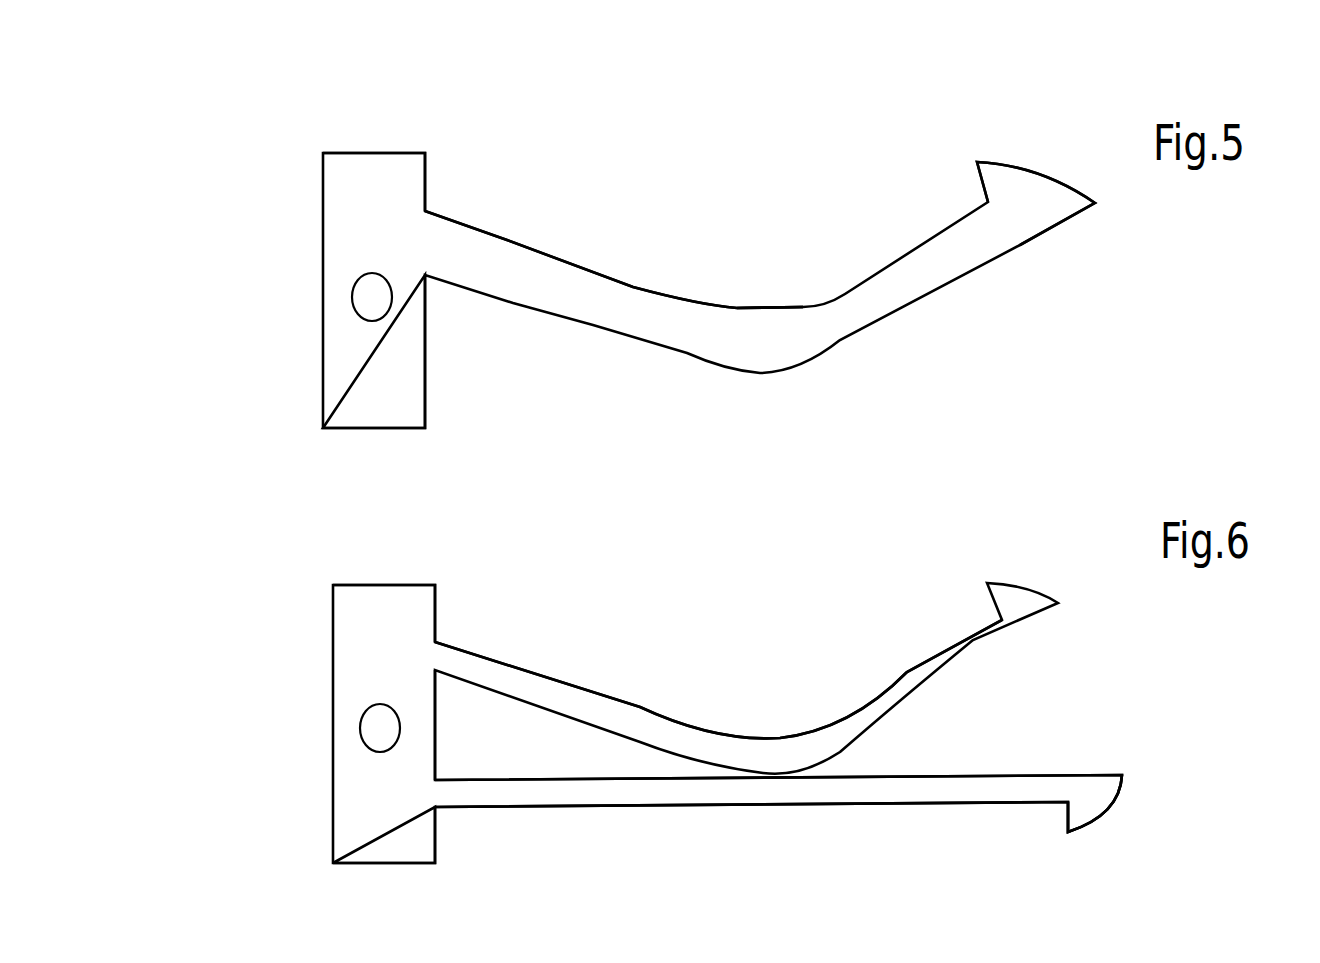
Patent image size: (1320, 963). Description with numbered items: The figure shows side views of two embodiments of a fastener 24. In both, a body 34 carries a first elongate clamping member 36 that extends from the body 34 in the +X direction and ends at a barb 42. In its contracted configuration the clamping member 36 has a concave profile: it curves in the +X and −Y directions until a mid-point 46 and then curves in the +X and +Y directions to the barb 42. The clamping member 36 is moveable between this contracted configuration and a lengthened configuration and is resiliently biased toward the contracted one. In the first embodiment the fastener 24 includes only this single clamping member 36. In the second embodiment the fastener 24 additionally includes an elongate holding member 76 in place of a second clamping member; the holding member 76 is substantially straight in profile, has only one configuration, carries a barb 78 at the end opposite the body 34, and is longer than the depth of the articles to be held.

In FIG. 5, the fastener 24 is at (863, 180).
In FIG. 6, the fastener 24 is at (825, 662).
In FIG. 5, the body 34 is at (352, 243).
In FIG. 6, the body 34 is at (365, 815).
In FIG. 5, the first elongate clamping member 36 is at (682, 318).
In FIG. 6, the first elongate clamping member 36 is at (672, 713).
In FIG. 5, the barb 42 is at (1035, 190).
In FIG. 5, the mid-point 46 is at (772, 308).
In FIG. 6, the elongate holding member 76 is at (758, 813).
In FIG. 6, the barb 78 is at (1088, 805).